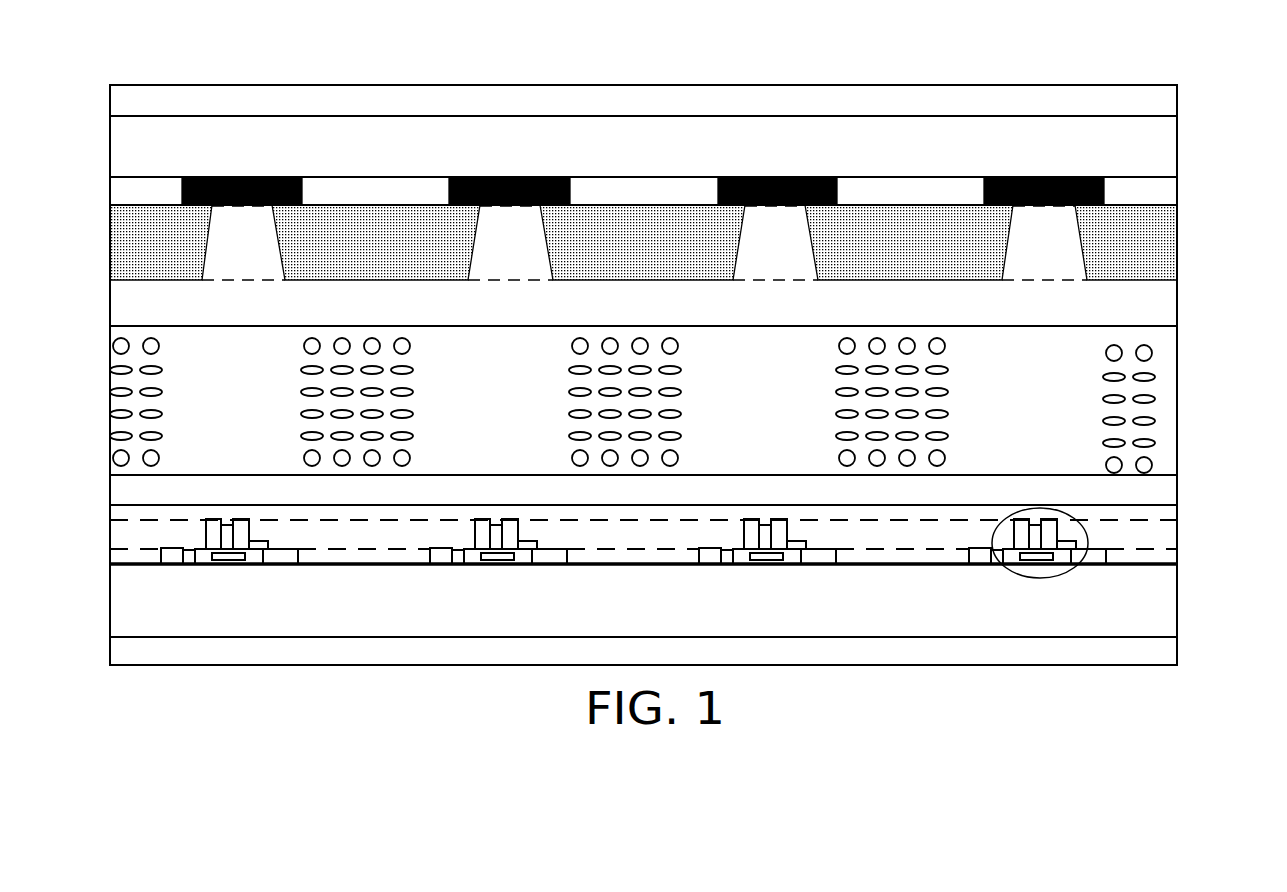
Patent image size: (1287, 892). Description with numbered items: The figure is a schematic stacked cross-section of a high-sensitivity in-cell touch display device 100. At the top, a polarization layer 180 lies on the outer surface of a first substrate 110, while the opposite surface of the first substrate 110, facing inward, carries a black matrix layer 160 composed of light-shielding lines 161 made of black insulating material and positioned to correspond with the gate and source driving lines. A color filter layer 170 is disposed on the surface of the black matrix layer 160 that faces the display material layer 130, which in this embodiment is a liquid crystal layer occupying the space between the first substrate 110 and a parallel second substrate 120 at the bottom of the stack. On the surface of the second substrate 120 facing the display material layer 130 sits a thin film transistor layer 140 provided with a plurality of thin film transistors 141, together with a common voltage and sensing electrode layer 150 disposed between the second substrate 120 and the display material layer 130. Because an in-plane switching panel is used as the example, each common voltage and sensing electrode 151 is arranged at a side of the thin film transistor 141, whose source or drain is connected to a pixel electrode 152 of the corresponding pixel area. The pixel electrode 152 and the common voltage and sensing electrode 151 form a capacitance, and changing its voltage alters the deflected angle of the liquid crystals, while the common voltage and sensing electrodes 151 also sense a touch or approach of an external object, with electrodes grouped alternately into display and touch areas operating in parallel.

The high-sensitivity in-cell touch display device 100 is at (70, 113).
The first substrate 110 is at (1163, 140).
The second substrate 120 is at (1162, 606).
The display material layer 130 is at (1150, 398).
The thin film transistor layer 140 is at (674, 555).
The thin film transistor 141 is at (997, 528).
The common voltage and sensing electrode layer 150 is at (1155, 561).
The common voltage and sensing electrode 151 is at (968, 558).
The pixel electrode 152 is at (1095, 561).
The black matrix layer 160 is at (682, 164).
The light-shielding line 161 is at (780, 176).
The color filter layer 170 is at (1133, 250).
The polarization layer 180 is at (1163, 103).